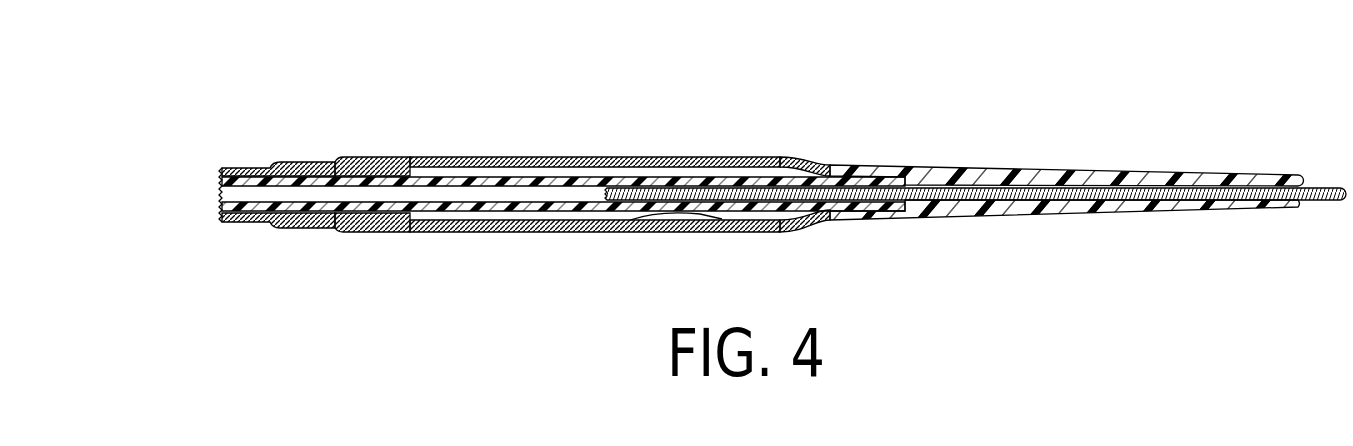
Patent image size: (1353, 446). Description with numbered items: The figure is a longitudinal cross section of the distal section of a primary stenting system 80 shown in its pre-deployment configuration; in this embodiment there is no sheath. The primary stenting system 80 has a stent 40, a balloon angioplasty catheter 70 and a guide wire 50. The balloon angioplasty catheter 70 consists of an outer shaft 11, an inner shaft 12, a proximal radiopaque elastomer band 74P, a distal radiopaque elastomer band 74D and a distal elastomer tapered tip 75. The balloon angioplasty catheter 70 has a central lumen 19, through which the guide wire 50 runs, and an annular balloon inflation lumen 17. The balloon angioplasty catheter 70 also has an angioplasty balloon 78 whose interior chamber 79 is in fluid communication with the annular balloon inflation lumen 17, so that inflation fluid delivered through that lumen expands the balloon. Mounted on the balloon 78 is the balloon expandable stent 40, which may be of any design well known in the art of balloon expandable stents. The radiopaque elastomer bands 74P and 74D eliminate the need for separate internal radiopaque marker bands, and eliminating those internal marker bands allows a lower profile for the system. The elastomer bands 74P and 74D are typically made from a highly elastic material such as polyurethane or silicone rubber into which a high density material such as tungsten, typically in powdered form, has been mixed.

The outer shaft 11 is at (240, 167).
The inner shaft 12 is at (222, 172).
The annular balloon inflation lumen 17 is at (222, 208).
The central lumen 19 is at (285, 187).
The stent 40 is at (613, 157).
The guide wire 50 is at (1333, 185).
The balloon angioplasty catheter 70 is at (1062, 225).
The proximal radiopaque elastomer band 74P is at (387, 157).
The distal radiopaque elastomer band 74D is at (795, 153).
The distal elastomer tapered tip 75 is at (1123, 167).
The angioplasty balloon 78 is at (547, 233).
The interior chamber 79 is at (690, 222).
The primary stenting system 80 is at (823, 103).